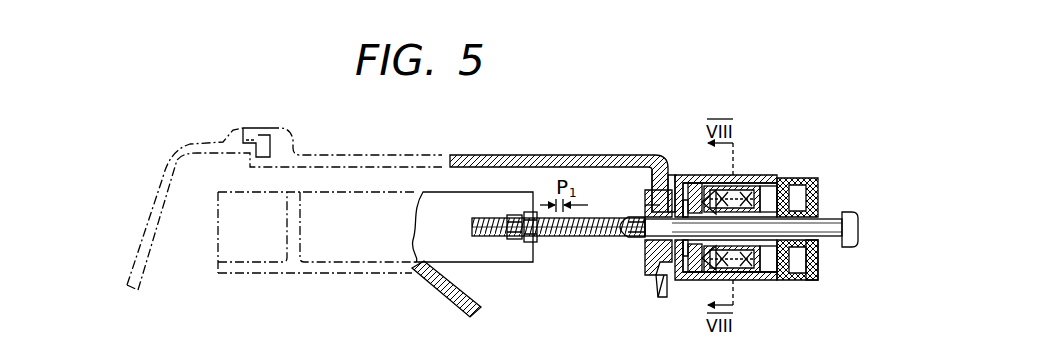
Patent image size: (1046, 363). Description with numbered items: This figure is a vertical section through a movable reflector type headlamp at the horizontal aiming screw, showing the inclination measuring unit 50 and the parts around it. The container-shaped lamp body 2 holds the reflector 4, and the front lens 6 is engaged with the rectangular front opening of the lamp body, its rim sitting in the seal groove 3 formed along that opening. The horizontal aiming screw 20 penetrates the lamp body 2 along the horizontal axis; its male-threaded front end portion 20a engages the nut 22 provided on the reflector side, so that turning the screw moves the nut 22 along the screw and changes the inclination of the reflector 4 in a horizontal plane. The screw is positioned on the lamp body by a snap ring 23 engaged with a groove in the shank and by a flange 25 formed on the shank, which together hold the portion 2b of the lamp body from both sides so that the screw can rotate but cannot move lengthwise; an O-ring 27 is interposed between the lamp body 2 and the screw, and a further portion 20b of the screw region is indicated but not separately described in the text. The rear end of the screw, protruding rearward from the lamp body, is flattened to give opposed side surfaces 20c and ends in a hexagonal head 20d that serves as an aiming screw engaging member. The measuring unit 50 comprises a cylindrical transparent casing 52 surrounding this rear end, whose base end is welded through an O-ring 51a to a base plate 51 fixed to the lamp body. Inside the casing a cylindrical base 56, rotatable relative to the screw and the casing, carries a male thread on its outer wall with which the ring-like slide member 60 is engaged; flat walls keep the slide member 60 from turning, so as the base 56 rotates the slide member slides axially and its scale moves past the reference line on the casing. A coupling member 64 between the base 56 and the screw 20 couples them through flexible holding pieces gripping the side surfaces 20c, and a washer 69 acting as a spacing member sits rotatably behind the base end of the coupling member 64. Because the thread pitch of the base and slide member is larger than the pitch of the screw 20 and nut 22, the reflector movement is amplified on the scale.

The lamp body 2 is at (495, 153).
The portion of the lamp body 2b is at (647, 257).
The seal groove 3 is at (258, 127).
The reflector 4 is at (440, 287).
The front lens 6 is at (157, 193).
The horizontal aiming screw 20 is at (833, 214).
The male-threaded front end portion 20a is at (573, 237).
The bent portion of bar 20b is at (605, 182).
The side surfaces 20c is at (812, 205).
The hexagonal head 20d is at (857, 224).
The nut 22 is at (513, 242).
The snap ring 23 is at (643, 205).
The flange 25 is at (663, 273).
The O-ring 27 is at (637, 245).
The first inclination measuring unit 50 is at (769, 166).
The base plate 51 is at (668, 178).
The O-ring 51a is at (672, 172).
The transparent casing 52 is at (695, 177).
The cylindrical base 56 is at (693, 268).
The slide member 60 is at (741, 173).
The coupling member 64 is at (817, 256).
The washer 69 is at (791, 177).